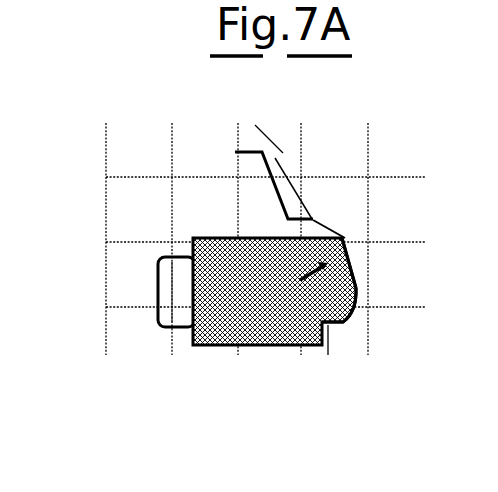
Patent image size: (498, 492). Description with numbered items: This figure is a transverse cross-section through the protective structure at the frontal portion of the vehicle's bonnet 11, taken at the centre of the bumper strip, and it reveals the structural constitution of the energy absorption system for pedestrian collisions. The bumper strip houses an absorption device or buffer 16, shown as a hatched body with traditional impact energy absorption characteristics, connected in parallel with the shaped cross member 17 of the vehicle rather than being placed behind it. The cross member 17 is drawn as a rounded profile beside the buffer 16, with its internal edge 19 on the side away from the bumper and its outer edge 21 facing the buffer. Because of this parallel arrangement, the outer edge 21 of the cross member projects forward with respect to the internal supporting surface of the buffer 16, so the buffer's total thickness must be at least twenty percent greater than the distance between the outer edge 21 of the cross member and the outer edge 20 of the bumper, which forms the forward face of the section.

The bonnet 11 is at (297, 190).
The absorption device or buffer 16 is at (347, 257).
The cross member 17 is at (178, 303).
The internal edge 19 is at (155, 264).
The outer edge of the bumper 20 is at (353, 287).
The outer edge of the cross member 21 is at (198, 297).